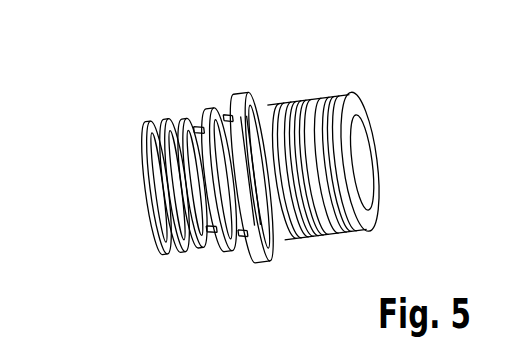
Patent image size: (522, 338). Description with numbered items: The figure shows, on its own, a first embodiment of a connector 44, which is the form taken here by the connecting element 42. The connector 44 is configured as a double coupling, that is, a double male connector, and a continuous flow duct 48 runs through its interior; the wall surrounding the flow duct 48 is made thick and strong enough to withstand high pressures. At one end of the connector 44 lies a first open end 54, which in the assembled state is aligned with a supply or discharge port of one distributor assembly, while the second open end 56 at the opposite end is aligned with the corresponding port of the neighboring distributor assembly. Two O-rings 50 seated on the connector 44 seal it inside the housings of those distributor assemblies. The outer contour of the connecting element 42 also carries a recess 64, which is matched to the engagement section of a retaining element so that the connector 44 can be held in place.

The connecting element 42 is at (116, 103).
The connector 44 is at (292, 169).
The flow duct 48 is at (354, 154).
The O-rings 50 is at (316, 98).
The first open end 54 is at (358, 168).
The second open end 56 is at (193, 247).
The recess 64 is at (231, 107).